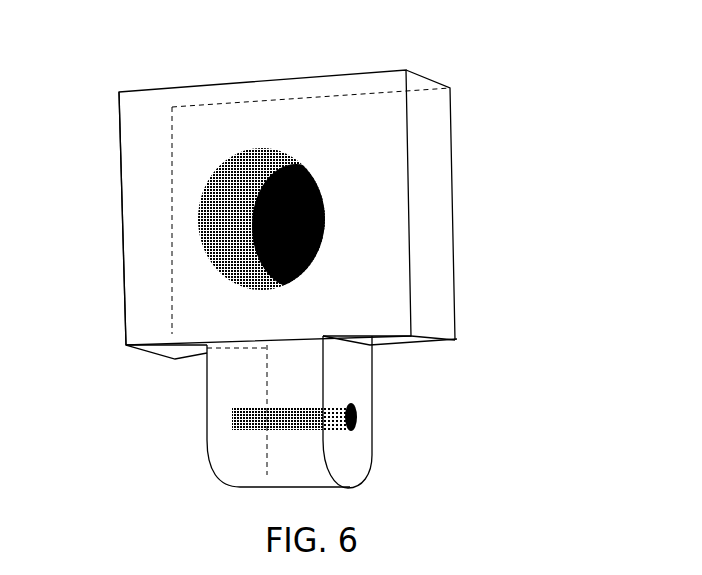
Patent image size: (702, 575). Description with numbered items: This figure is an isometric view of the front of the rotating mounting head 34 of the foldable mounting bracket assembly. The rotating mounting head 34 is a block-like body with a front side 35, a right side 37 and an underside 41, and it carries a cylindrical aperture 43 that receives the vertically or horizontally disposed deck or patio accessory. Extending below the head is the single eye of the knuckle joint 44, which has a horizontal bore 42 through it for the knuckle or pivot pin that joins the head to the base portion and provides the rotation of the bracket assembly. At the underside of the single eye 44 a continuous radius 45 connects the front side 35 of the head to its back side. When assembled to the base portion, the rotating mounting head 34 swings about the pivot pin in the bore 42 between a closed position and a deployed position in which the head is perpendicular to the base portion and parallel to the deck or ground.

The rotating mounting head 34 is at (337, 108).
The front side 35 is at (157, 163).
The right side 37 is at (433, 180).
The underside 41 is at (420, 342).
The horizontal bore 42 is at (357, 416).
The cylindrical aperture 43 is at (242, 177).
The single eye of the knuckle joint 44 is at (230, 388).
The continuous radius 45 is at (278, 464).